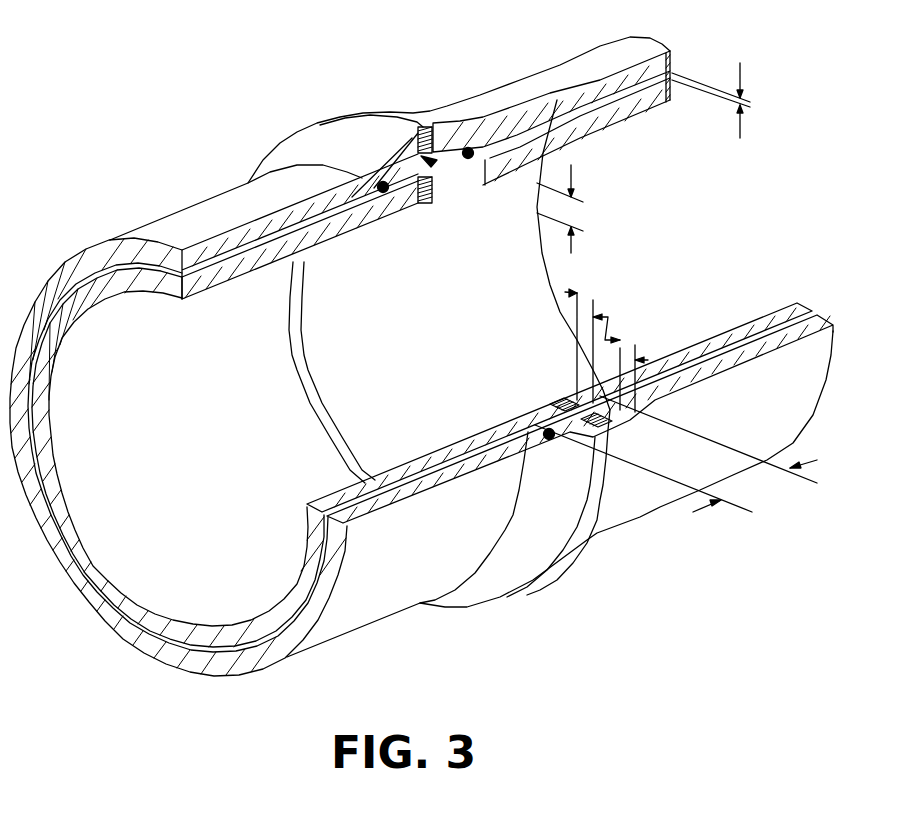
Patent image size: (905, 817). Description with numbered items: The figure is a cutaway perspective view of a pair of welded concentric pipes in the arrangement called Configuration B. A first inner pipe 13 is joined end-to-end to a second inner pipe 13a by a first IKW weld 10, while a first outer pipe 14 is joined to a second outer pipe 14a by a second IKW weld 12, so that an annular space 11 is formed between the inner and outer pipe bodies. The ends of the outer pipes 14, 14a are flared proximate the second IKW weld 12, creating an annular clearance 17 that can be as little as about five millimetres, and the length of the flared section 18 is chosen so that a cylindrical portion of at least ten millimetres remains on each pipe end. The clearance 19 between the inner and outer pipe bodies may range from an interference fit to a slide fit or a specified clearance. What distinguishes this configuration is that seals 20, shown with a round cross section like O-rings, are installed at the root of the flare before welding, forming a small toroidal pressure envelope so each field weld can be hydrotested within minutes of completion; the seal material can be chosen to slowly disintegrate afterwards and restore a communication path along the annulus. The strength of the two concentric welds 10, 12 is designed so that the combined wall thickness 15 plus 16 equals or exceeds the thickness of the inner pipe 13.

The first IKW weld 10 is at (442, 172).
The annular space 11 is at (435, 162).
The second IKW weld 12 is at (447, 105).
The first inner pipe 13 is at (296, 245).
The second inner pipe 13a is at (624, 113).
The first outer pipe 14 is at (224, 244).
The second outer pipe 14a is at (622, 82).
The wall thickness 15 is at (608, 317).
The wall thickness 16 is at (648, 360).
The annular clearance 17 is at (574, 167).
The flared section length 18 is at (676, 454).
The clearance between inner and outer pipe bodies 19 is at (745, 70).
The seals 20 is at (500, 137).